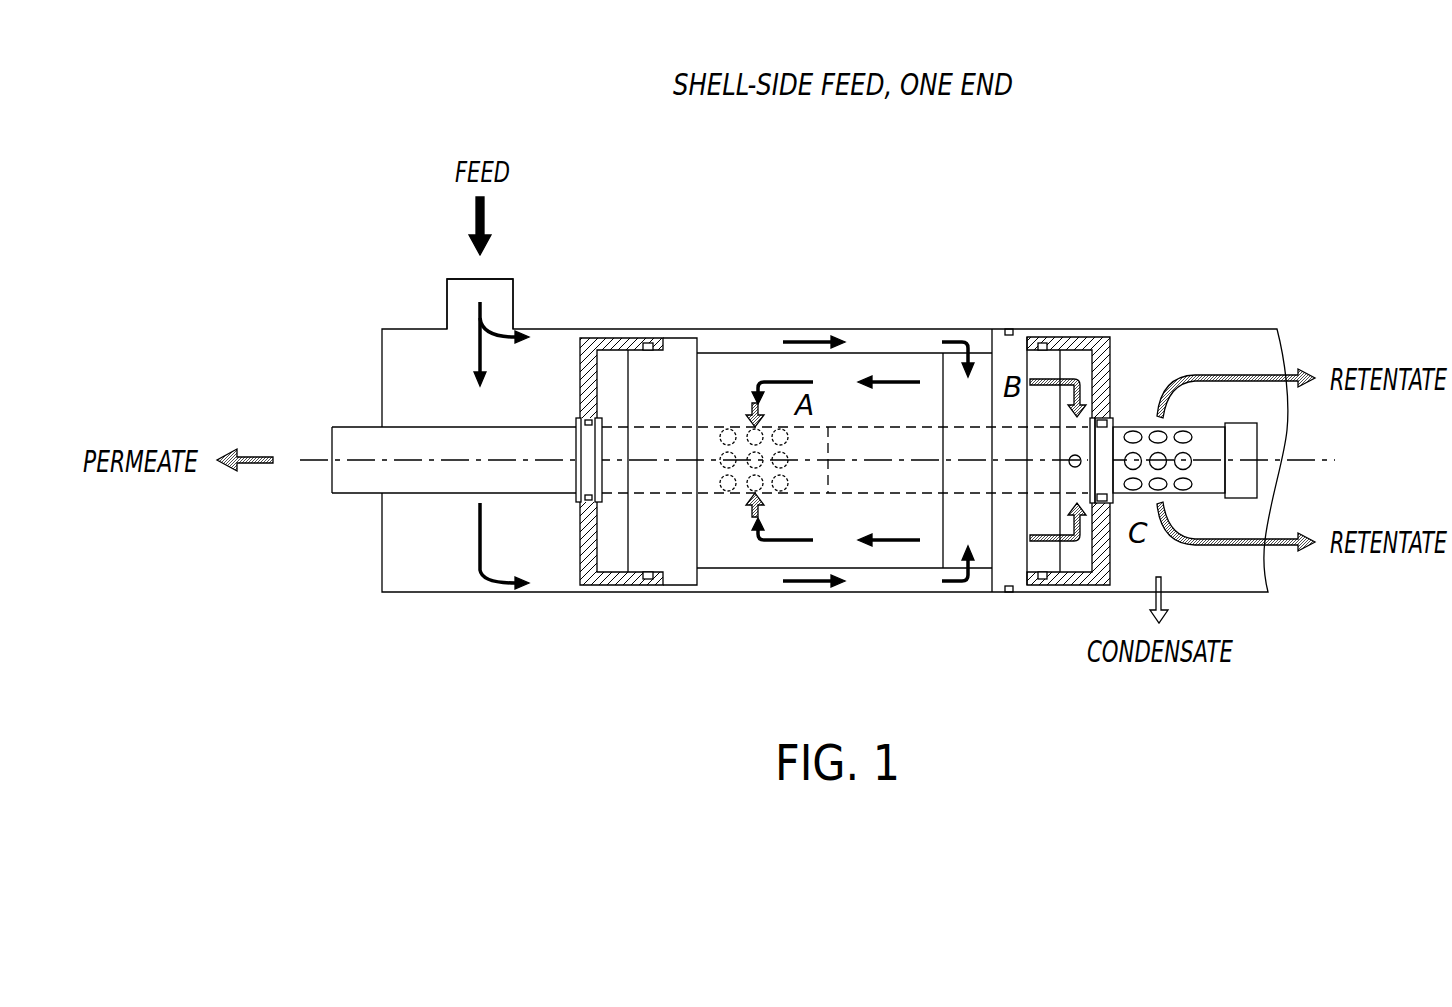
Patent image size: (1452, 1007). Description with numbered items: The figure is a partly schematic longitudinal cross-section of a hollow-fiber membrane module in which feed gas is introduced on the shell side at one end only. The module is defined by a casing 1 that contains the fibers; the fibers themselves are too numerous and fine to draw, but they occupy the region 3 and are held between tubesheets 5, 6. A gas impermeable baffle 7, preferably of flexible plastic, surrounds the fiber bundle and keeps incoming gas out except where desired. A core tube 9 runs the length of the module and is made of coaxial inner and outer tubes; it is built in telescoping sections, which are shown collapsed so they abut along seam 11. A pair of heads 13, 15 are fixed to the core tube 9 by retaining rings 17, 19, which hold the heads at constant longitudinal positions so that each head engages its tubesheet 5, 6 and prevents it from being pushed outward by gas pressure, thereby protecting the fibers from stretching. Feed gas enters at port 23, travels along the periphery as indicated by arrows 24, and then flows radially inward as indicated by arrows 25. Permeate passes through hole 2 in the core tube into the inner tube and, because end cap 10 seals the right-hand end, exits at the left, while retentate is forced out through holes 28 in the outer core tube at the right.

The casing 1 is at (382, 543).
The hole 2 is at (1072, 465).
The fiber region 3 is at (838, 398).
The tubesheet 5 is at (681, 338).
The tubesheet 6 is at (1020, 329).
The gas impermeable baffle 7 is at (738, 353).
The core tube 9 is at (332, 427).
The end cap 10 is at (1257, 450).
The seam 11 is at (838, 495).
The head 13 is at (601, 338).
The head 15 is at (1111, 337).
The retaining ring 17 is at (580, 460).
The retaining ring 19 is at (1112, 418).
The port 23 is at (500, 293).
The arrows 24 is at (818, 329).
The arrows 25 is at (975, 347).
The holes 28 is at (1185, 462).